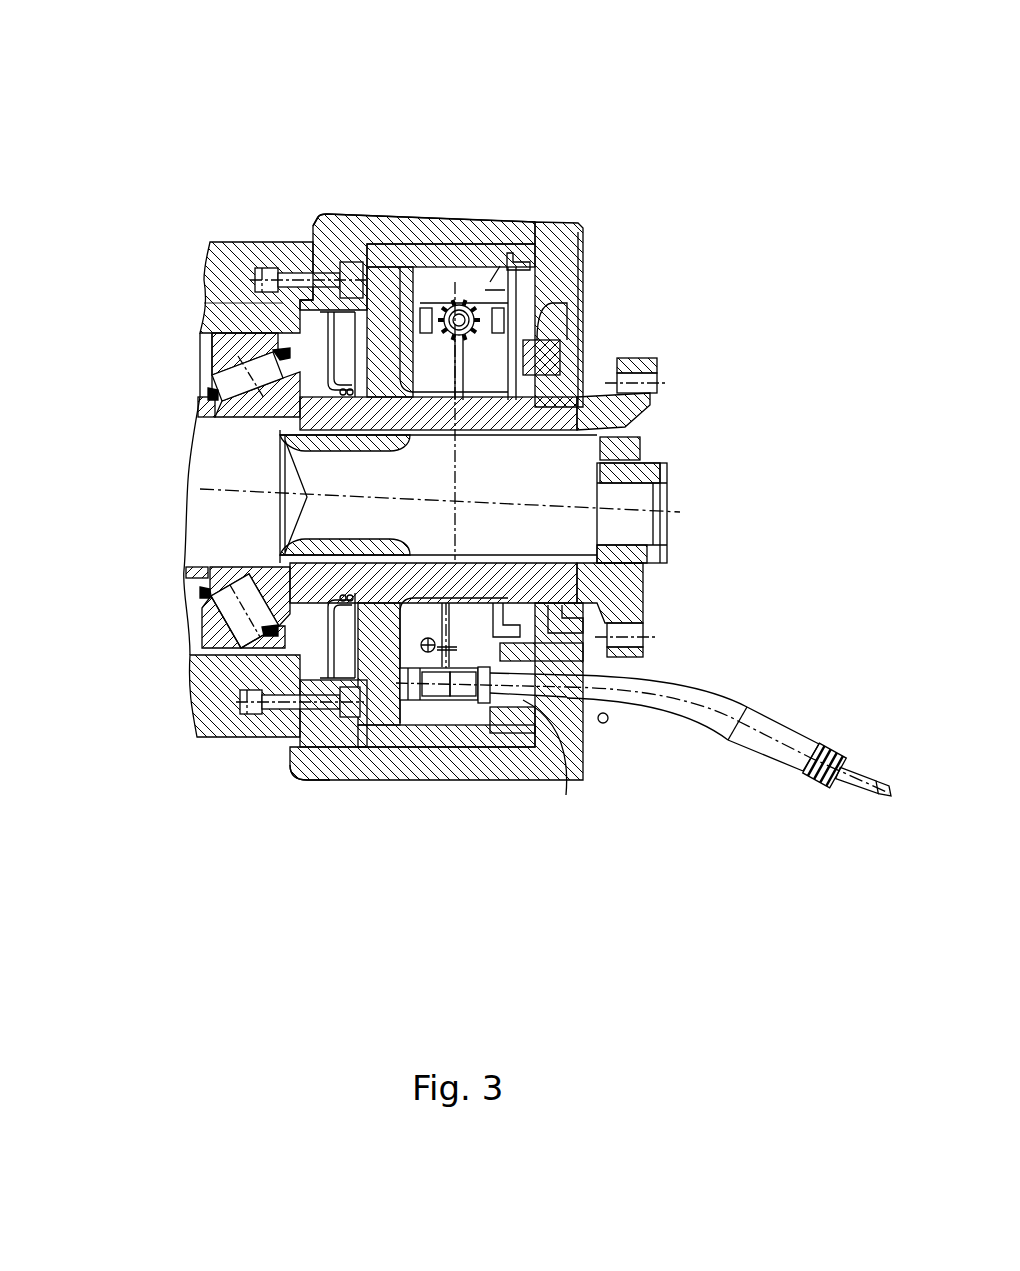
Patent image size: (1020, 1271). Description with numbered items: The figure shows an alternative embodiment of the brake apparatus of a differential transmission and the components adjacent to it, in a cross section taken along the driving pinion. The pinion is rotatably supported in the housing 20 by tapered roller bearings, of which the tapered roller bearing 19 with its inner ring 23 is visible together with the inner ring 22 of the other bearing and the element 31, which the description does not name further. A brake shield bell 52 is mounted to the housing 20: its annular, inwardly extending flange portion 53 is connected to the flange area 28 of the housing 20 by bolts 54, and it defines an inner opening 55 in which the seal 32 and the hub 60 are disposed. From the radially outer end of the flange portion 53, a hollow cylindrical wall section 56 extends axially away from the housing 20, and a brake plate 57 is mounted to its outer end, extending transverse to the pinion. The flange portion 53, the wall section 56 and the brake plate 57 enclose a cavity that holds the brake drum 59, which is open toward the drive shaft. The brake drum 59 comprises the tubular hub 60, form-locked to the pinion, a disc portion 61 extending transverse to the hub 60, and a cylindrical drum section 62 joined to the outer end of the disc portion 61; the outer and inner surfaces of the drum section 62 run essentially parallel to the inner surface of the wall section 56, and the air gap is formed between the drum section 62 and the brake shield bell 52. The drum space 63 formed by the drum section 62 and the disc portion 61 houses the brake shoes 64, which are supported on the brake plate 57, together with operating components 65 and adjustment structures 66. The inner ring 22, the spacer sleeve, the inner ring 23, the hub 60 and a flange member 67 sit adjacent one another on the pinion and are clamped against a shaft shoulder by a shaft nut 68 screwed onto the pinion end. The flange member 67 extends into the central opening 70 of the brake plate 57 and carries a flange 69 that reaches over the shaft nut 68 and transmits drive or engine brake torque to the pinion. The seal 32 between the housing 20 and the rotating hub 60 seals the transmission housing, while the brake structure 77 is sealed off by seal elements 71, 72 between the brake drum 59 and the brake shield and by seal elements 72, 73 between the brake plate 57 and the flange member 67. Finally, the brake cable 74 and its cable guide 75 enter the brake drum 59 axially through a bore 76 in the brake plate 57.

The tapered roller bearing 19 is at (210, 634).
The housing 20 is at (205, 737).
The inner ring 22 is at (192, 578).
The inner ring 23 is at (200, 592).
The flange area 28 is at (300, 763).
The tapered roller bearing 31 is at (280, 350).
The seal 32 is at (278, 440).
The brake shield bell 52 is at (366, 203).
The flange portion 53 is at (313, 232).
The bolts 54 is at (295, 245).
The inner opening 55 is at (316, 232).
The hollow cylindrical wall section 56 is at (407, 222).
The brake plate 57 is at (583, 238).
The brake drum 59 is at (468, 240).
The tubular hub 60 is at (300, 447).
The disc portion 61 is at (283, 303).
The cylindrical drum section 62 is at (500, 275).
The drum space 63 is at (376, 780).
The brake shoes 64 is at (557, 335).
The operating components 65 is at (477, 780).
The adjustment structures 66 is at (477, 310).
The flange member 67 is at (635, 417).
The shaft nut 68 is at (660, 440).
The flange 69 is at (657, 358).
The central opening 70 is at (548, 630).
The seal element 71 is at (520, 235).
The seal element 72 is at (578, 232).
The seal element 73 is at (500, 373).
The brake cable 74 is at (880, 797).
The cable guide 75 is at (780, 763).
The bore 76 is at (566, 778).
The brake structure 77 is at (429, 200).